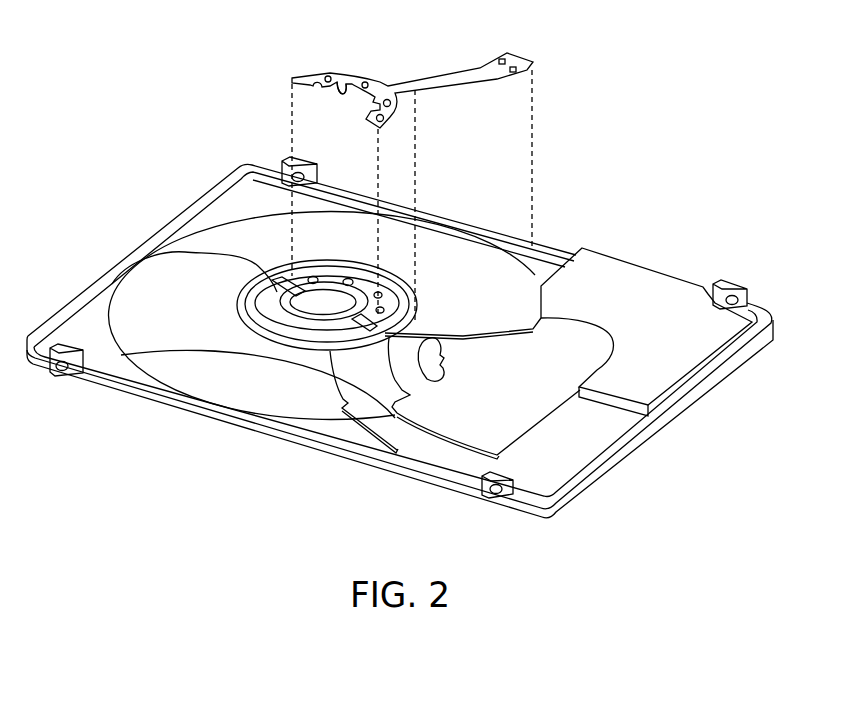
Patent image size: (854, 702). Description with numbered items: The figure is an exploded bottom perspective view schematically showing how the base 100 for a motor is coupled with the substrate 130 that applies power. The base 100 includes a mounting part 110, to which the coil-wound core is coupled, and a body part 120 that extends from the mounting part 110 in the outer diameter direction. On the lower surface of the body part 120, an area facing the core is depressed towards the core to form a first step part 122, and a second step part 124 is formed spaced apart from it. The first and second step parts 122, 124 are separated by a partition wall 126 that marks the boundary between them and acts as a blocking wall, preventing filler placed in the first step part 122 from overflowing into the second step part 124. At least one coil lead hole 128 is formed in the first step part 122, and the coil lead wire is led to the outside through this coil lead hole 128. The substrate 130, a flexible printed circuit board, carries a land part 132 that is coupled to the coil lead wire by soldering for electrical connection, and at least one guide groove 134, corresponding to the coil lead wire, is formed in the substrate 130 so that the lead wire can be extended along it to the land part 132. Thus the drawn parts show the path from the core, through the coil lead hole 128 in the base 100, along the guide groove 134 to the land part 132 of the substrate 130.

The base for a motor 100 is at (663, 436).
The mounting part 110 is at (313, 296).
The body part 120 is at (228, 368).
The first step part 122 is at (366, 288).
The second step part 124 is at (273, 302).
The partition wall 126 is at (287, 277).
The coil lead hole 128 is at (385, 294).
The substrate 130 is at (400, 167).
The land part 132 is at (326, 78).
The guide groove 134 is at (341, 88).